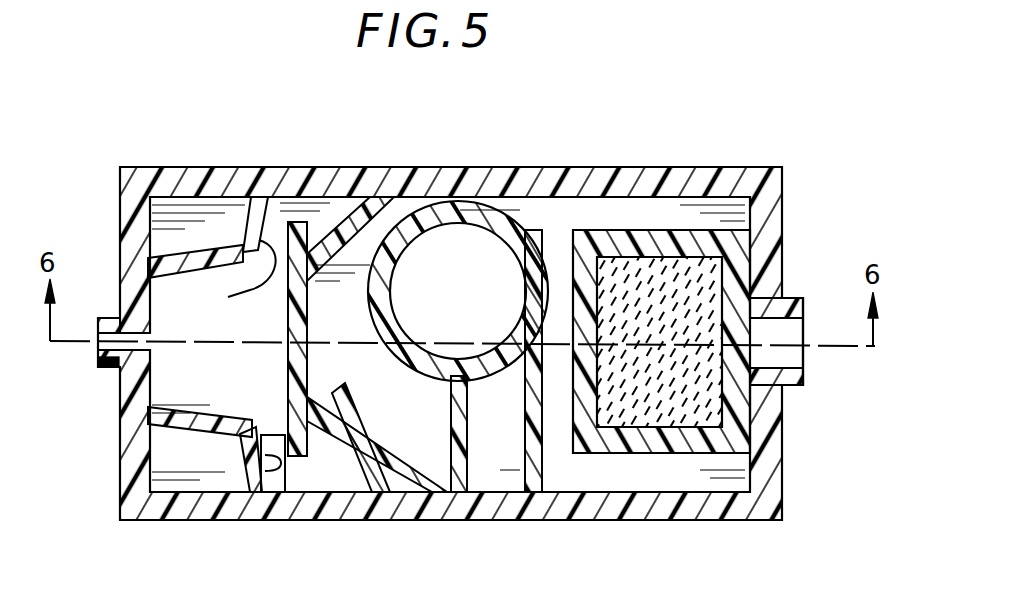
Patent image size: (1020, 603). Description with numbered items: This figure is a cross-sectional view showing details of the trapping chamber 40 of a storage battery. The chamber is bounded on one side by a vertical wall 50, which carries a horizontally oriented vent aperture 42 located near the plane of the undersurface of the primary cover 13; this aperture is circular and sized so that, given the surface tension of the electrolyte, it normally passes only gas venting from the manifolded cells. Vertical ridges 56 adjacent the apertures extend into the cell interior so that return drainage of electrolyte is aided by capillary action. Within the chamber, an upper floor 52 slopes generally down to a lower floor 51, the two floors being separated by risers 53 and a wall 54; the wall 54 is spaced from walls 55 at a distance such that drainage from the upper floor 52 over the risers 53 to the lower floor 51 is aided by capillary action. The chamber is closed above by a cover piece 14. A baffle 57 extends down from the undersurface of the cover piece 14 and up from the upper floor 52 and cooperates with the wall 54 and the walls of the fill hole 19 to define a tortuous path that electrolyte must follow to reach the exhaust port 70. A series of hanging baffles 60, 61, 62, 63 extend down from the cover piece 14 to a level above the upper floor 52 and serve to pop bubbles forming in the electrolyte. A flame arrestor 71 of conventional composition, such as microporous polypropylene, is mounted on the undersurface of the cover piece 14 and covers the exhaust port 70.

The trapping chamber 40 is at (670, 150).
The vertical wall 50 is at (120, 420).
The primary cover 13 is at (718, 504).
The hanging baffle 61 is at (338, 497).
The vertical ridges 56 is at (106, 318).
The vent aperture 42 is at (118, 346).
The risers 53 is at (283, 240).
The walls 55 is at (260, 262).
The lower floor 51 is at (210, 390).
The wall 54 is at (288, 318).
The hanging baffle 60 is at (338, 222).
The fill hole 19 is at (452, 256).
The hanging baffle 63 is at (532, 470).
The hanging baffle 62 is at (462, 470).
The baffle 57 is at (352, 470).
The upper floor 52 is at (433, 470).
The cover piece 14 is at (600, 505).
The flame arrestor 71 is at (690, 305).
The exhaust port 70 is at (785, 337).